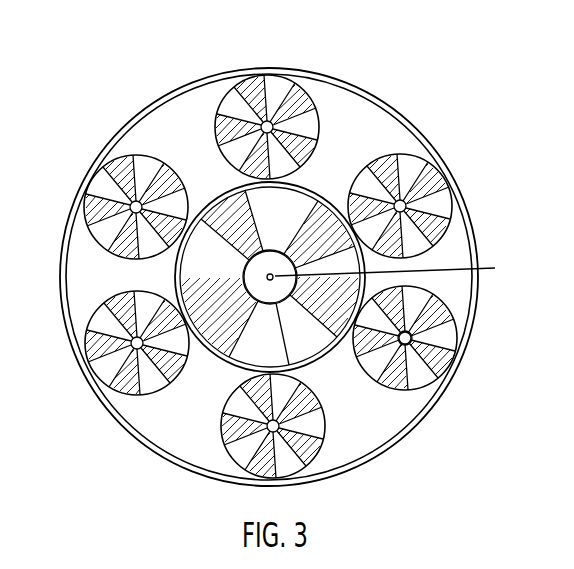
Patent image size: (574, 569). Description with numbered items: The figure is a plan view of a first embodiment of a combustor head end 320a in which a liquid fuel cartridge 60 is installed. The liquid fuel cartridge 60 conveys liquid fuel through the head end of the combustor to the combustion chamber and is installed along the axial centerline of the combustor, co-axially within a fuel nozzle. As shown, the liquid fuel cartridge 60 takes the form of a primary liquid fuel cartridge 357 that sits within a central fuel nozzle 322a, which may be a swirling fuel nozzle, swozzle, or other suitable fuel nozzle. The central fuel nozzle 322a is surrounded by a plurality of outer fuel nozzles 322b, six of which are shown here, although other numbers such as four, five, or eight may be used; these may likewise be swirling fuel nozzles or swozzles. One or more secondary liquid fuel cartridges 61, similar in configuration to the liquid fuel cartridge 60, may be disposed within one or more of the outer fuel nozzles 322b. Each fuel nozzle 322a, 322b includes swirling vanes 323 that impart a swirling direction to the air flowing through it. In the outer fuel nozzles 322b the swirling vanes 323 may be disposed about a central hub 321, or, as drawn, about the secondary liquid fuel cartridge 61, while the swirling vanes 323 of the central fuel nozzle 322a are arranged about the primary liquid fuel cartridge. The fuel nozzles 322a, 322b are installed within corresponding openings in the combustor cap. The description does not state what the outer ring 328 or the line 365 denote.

The combustor head end 320a is at (88, 114).
The central hub 321 is at (267, 127).
The central fuel nozzle 322a is at (327, 364).
The outer fuel nozzles 322b is at (330, 113).
The swirling vanes 323 is at (295, 100).
The housing ring 328 is at (80, 246).
The liquid fuel cartridge 60 is at (237, 276).
The secondary liquid fuel cartridge 61 is at (413, 333).
The primary liquid fuel cartridge 357 is at (248, 302).
The axis line 365 is at (408, 268).